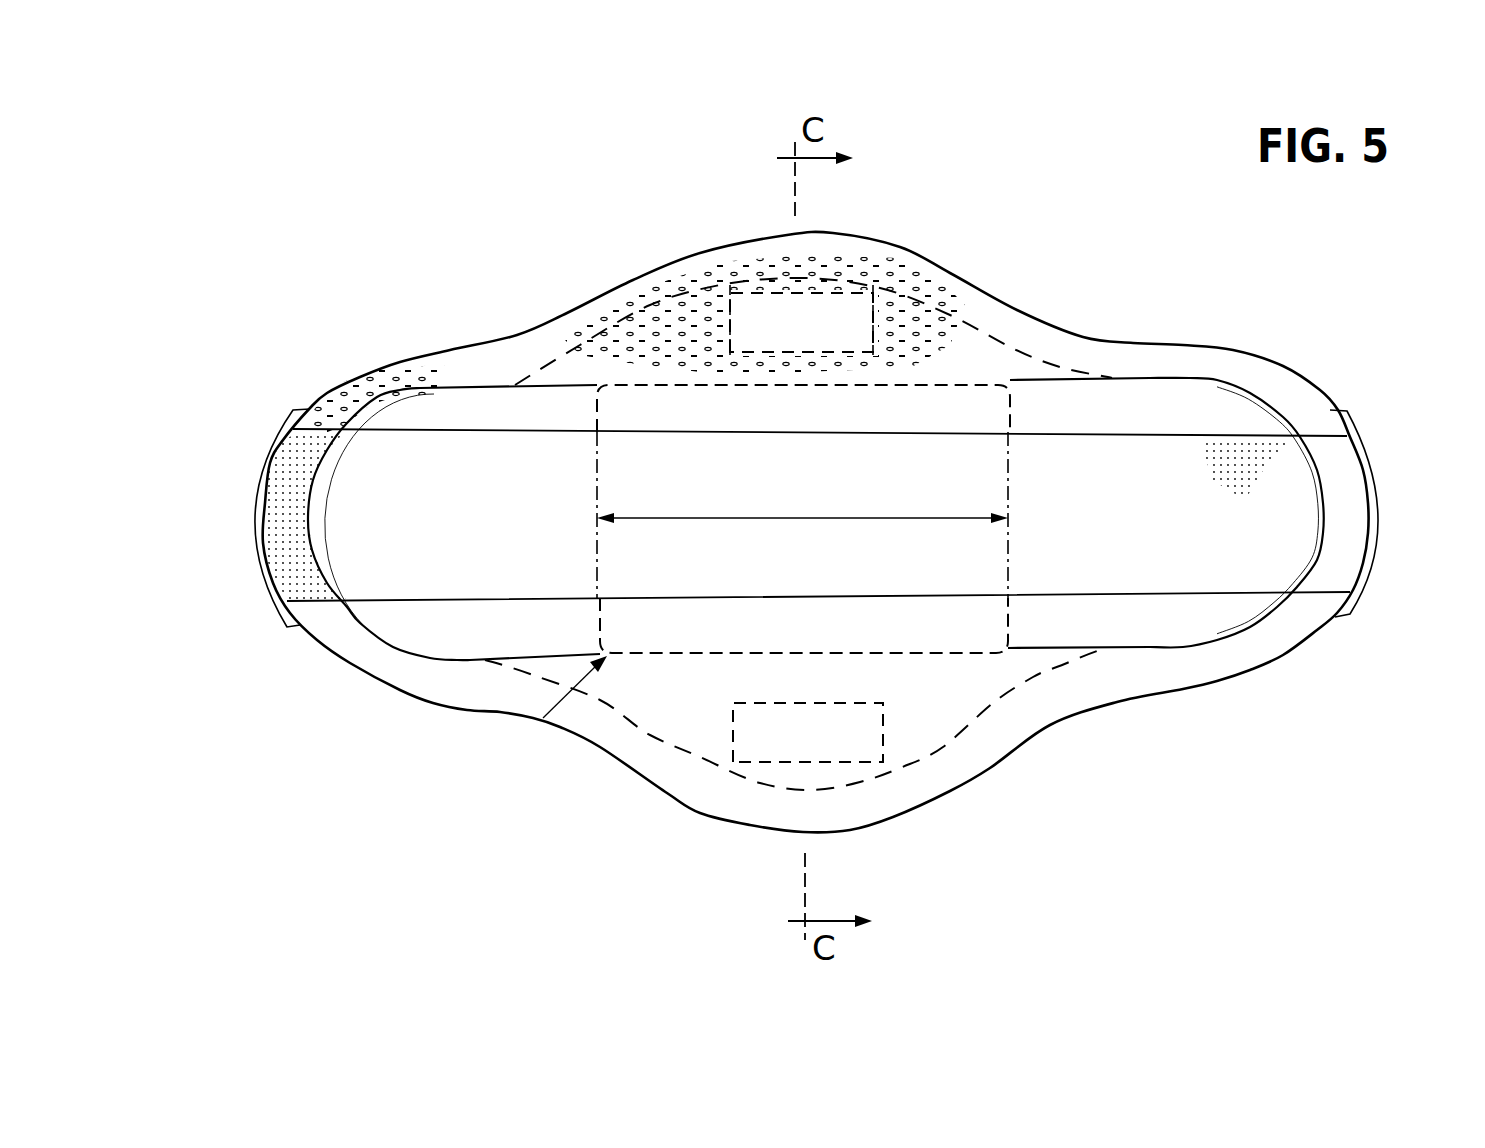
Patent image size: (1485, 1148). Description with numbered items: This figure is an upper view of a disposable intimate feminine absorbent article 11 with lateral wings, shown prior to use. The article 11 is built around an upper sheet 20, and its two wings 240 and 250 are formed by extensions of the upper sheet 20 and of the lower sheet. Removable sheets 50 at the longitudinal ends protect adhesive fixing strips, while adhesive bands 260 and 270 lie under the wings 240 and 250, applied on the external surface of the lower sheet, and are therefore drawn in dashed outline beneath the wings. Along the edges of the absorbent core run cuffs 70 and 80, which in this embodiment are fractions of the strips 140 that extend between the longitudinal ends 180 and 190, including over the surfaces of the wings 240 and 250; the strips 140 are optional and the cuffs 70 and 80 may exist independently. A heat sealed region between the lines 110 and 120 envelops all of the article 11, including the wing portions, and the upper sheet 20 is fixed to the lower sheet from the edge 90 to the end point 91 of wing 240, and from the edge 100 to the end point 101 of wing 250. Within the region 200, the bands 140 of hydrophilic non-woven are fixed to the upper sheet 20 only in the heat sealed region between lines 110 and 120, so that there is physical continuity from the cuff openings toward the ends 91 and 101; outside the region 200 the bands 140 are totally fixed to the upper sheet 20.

The absorbent article 11 is at (490, 274).
The upper sheet 20 is at (1182, 552).
The removable sheet 50 is at (267, 458).
The cuff 70 is at (725, 410).
The cuff 80 is at (697, 635).
The edge 90 is at (945, 374).
The end point of wing 91 is at (797, 233).
The edge 100 is at (520, 716).
The end point of wing 101 is at (795, 837).
The line 110 is at (397, 393).
The line 120 is at (322, 400).
The strip 140 is at (1123, 408).
The longitudinal end 180 is at (1412, 509).
The longitudinal end 190 is at (222, 512).
The region 200 is at (777, 518).
The wing 240 is at (917, 327).
The wing 250 is at (930, 700).
The adhesive band 260 is at (830, 312).
The adhesive band 270 is at (848, 738).